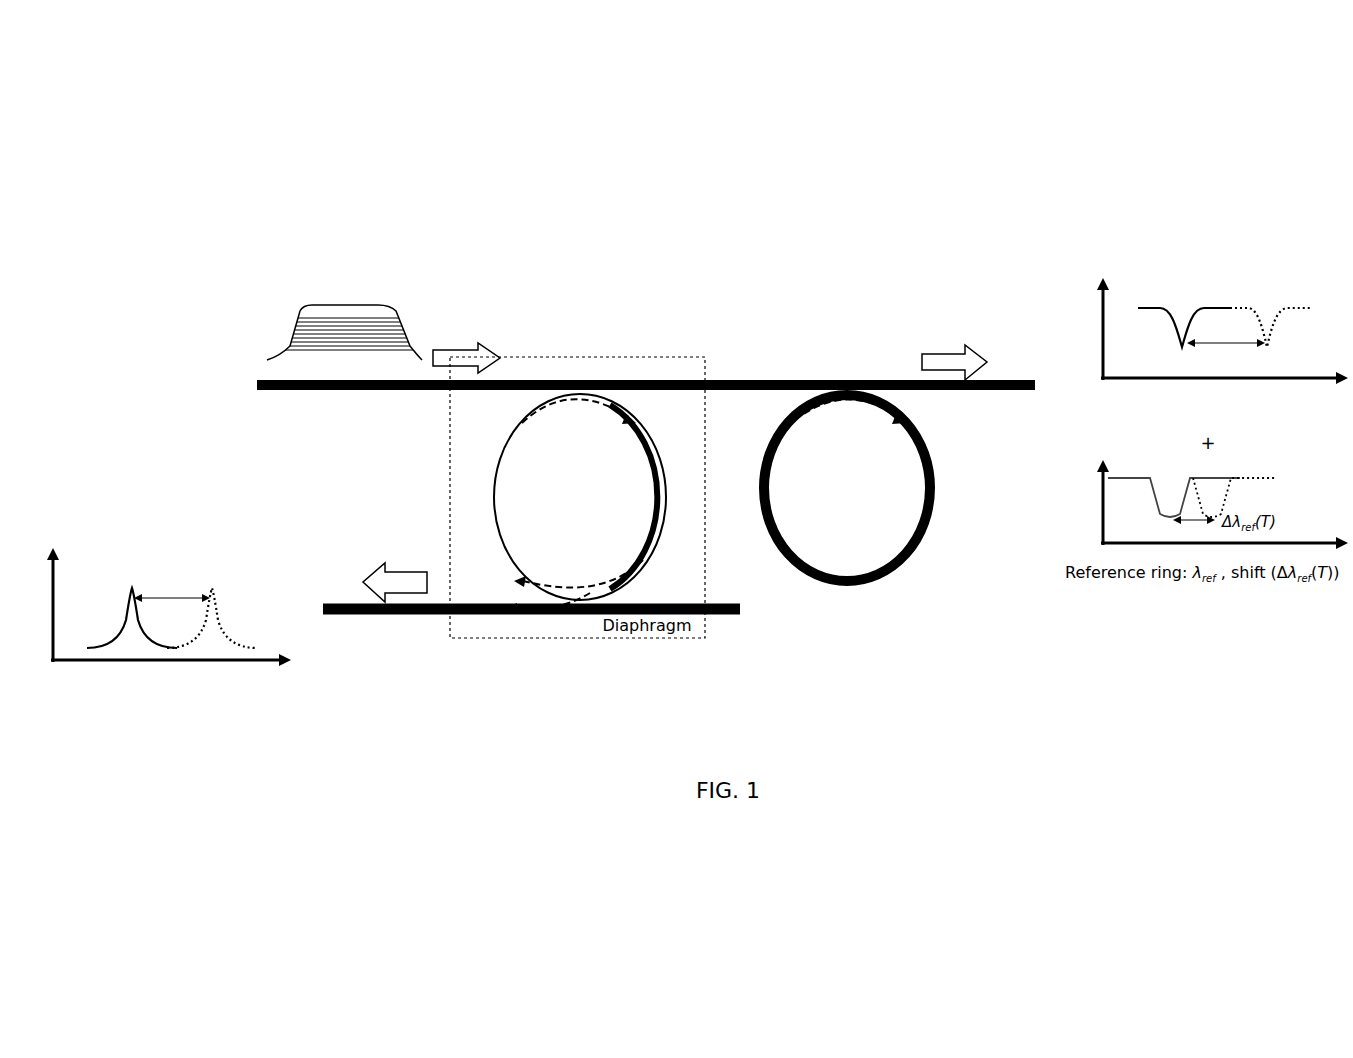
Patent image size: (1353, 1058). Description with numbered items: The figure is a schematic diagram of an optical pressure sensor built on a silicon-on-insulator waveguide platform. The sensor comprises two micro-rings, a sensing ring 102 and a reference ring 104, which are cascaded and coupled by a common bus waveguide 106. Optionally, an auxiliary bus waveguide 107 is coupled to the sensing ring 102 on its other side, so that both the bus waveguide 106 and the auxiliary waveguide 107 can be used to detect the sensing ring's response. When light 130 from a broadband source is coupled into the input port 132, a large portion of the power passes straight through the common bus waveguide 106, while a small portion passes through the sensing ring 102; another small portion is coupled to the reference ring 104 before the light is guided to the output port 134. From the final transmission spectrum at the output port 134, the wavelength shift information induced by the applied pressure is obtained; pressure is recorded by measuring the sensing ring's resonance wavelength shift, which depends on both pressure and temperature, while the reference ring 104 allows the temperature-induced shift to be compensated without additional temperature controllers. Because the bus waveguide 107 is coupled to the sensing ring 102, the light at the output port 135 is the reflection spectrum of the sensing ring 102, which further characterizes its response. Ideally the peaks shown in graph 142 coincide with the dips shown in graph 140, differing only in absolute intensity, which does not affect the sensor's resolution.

The sensing ring 102 is at (492, 498).
The reference ring 104 is at (892, 570).
The common bus waveguide 106 is at (744, 381).
The bus waveguide (auxiliary waveguide) 107 is at (387, 615).
The light 130 is at (345, 323).
The input port 132 is at (465, 308).
The output port 134 is at (968, 313).
The output port 135 is at (300, 537).
The graph 140 is at (1223, 300).
The graph 142 is at (138, 662).